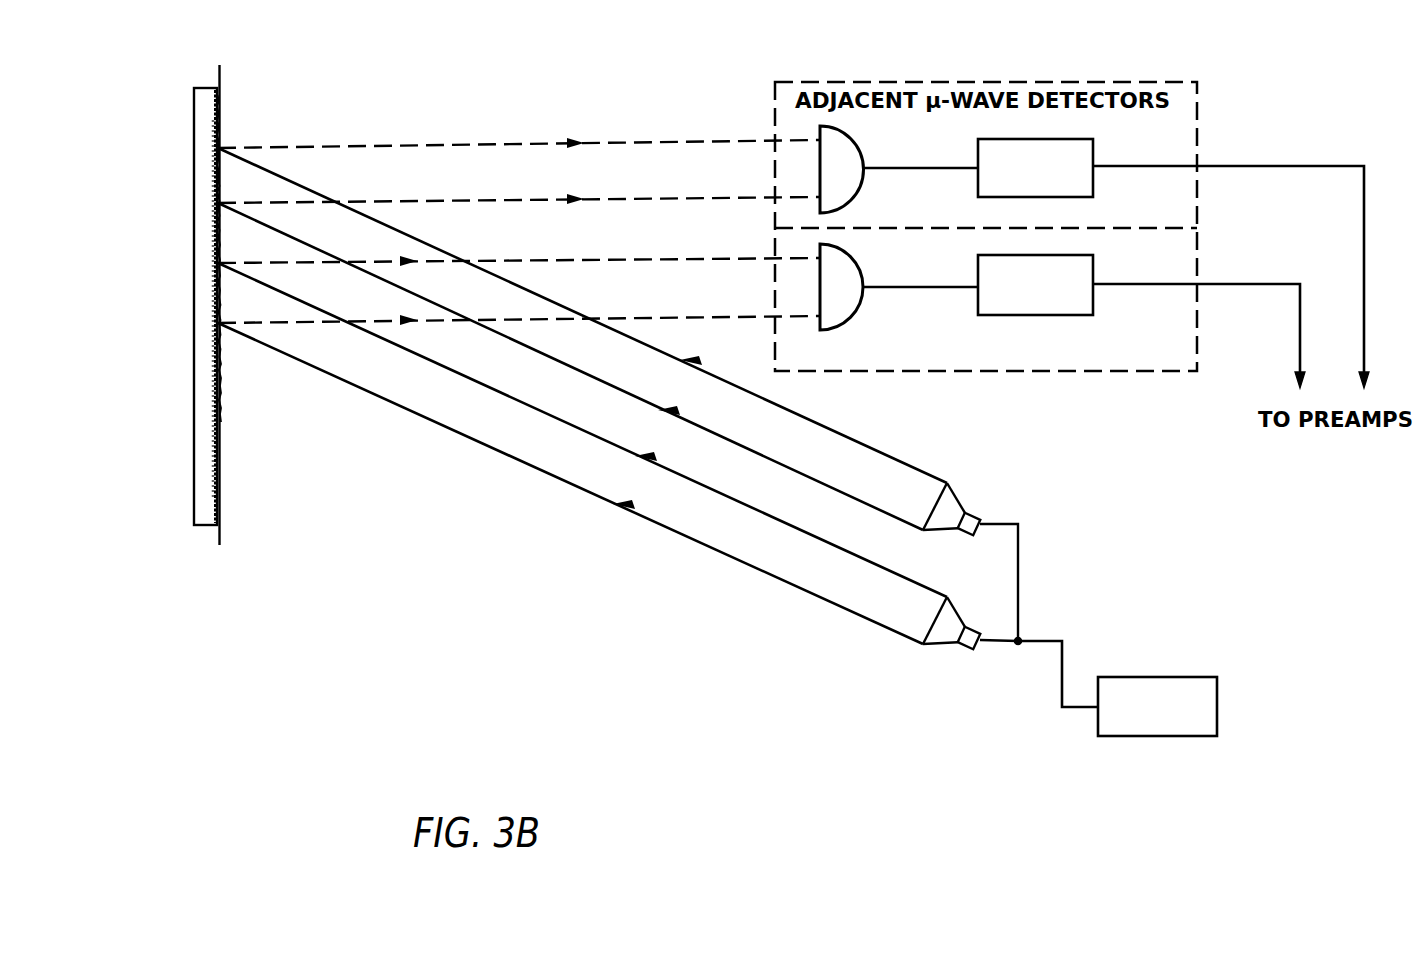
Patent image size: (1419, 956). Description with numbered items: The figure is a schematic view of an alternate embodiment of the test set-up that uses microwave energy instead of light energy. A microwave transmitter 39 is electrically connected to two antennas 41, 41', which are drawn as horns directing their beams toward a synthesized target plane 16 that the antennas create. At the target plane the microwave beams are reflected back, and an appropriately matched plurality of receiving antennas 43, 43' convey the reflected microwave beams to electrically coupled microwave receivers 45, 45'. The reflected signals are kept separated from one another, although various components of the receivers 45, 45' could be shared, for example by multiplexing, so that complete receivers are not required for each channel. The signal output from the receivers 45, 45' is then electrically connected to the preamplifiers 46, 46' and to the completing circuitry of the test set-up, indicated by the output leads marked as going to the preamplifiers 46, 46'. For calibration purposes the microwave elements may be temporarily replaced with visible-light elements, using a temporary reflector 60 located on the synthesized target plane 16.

The synthesized target plane 16 is at (214, 410).
The temporary reflector 60 is at (205, 461).
The antenna 41 is at (965, 650).
The antenna 41' is at (970, 535).
The microwave transmitter 39 is at (1157, 677).
The receiving antenna 43 is at (899, 286).
The receiving antenna 43' is at (899, 169).
The microwave receiver 45 is at (1068, 279).
The microwave receiver 45' is at (1071, 161).
The preamplifier 46 is at (1214, 376).
The preamplifier 46' is at (1241, 317).